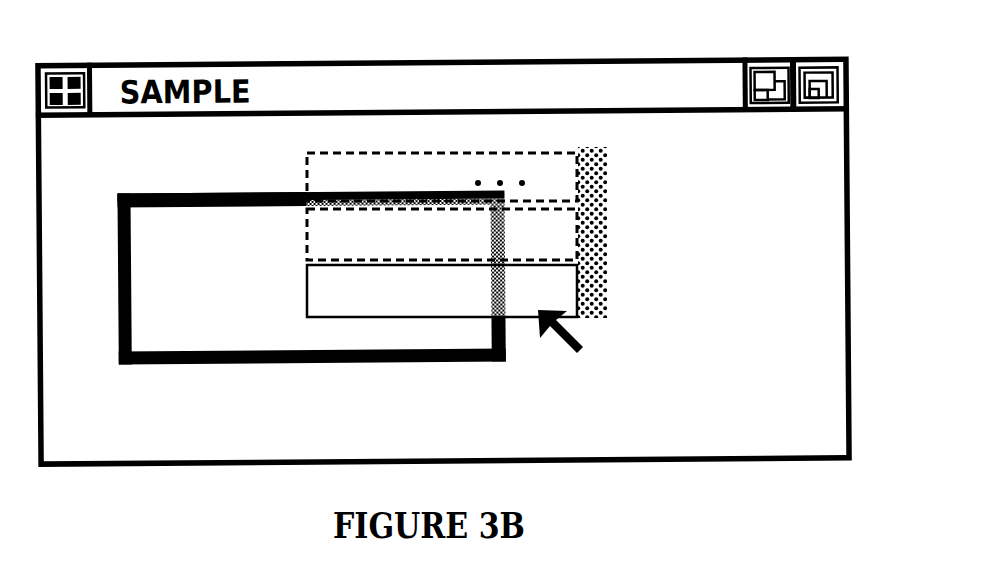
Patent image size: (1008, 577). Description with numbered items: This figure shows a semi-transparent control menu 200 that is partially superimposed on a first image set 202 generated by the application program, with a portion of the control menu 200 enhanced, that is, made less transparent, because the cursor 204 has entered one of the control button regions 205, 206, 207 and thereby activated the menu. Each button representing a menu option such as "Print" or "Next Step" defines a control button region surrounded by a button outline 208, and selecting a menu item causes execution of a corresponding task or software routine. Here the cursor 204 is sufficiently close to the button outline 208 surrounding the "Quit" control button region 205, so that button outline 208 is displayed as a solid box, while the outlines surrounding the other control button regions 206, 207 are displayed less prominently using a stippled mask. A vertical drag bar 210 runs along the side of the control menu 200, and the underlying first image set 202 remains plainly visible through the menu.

The control menu 200 is at (498, 217).
The first image set 202 is at (278, 395).
The cursor 204 is at (590, 344).
The control button region 205 is at (547, 303).
The control button region 206 is at (547, 245).
The control button region 207 is at (547, 185).
The button outline 208 is at (523, 318).
The drag bar 210 is at (630, 223).